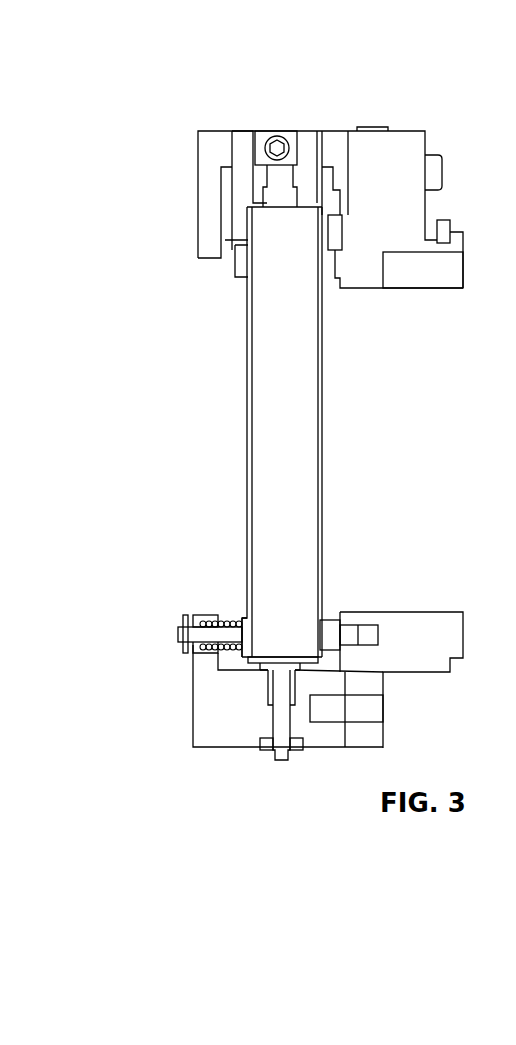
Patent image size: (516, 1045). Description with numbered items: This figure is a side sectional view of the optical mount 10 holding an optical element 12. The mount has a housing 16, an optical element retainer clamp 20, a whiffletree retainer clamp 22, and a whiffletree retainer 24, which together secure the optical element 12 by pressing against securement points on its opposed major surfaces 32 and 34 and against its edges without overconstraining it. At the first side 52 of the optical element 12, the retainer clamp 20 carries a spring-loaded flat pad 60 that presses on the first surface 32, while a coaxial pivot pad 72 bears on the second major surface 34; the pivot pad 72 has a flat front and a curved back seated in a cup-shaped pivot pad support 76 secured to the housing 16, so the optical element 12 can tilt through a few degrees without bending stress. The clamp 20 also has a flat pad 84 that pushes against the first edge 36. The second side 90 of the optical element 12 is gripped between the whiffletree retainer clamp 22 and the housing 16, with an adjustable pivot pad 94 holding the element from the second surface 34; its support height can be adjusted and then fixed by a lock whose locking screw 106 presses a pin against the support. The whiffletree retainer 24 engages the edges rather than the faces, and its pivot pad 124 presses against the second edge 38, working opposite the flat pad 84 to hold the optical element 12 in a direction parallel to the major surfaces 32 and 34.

The optical mount 10 is at (157, 153).
The optical element 12 is at (297, 413).
The housing 16 is at (440, 625).
The optical element retainer clamp 20 is at (212, 707).
The whiffletree retainer clamp 22 is at (207, 153).
The whiffletree retainer 24 is at (242, 153).
The first major surface 32 is at (248, 407).
The second major surface 34 is at (323, 360).
The first edge 36 is at (257, 660).
The second edge 38 is at (250, 202).
The first side of the optical element 52 is at (285, 585).
The flat pad 60 is at (162, 640).
The pivot pad 72 is at (333, 622).
The pivot pad support 76 is at (350, 635).
The flat pad 84 is at (285, 771).
The second side of the optical element 90 is at (270, 257).
The adjustable pivot pad 94 is at (345, 232).
The locking screw 106 is at (380, 127).
The pivot pad 124 is at (288, 200).